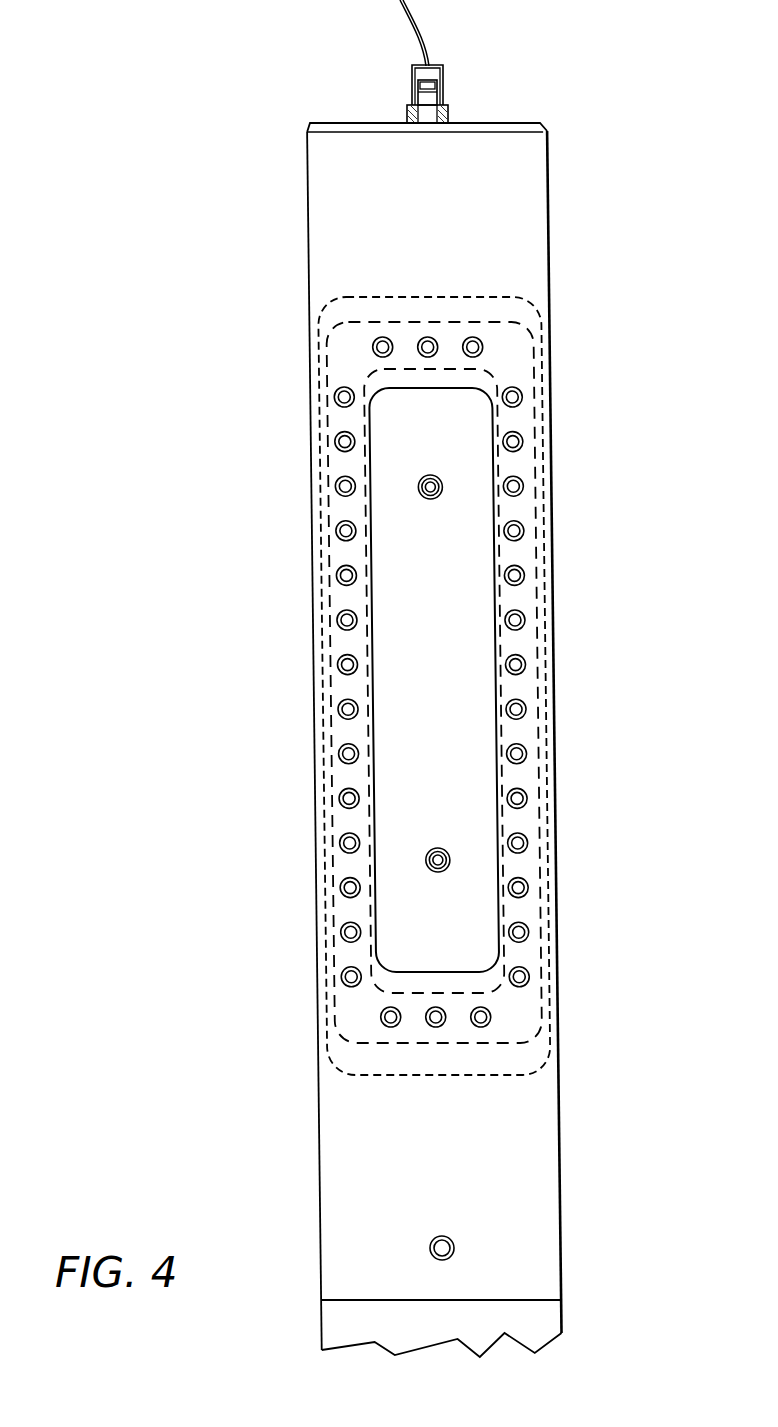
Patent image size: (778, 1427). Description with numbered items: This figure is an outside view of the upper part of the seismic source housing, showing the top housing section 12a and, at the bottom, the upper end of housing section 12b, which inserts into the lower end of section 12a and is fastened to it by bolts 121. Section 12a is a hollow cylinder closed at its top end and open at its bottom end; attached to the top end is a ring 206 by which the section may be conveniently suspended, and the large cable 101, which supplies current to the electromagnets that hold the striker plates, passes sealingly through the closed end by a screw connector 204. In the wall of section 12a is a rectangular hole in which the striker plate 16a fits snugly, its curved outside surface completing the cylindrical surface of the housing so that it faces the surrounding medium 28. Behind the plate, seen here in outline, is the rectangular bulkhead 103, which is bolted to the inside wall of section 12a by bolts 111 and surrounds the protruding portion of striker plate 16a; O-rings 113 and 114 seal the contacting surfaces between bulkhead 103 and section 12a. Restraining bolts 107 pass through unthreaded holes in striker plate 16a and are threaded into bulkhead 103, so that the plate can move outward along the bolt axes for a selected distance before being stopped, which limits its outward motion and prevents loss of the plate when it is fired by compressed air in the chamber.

The cable 101 is at (423, 33).
The ring 206 is at (433, 68).
The screw connector 204 is at (423, 97).
The housing section 12a is at (525, 183).
The housing section 12b is at (538, 1327).
The bulkhead 103 is at (347, 300).
The O-ring 113 is at (497, 322).
The O-ring 114 is at (380, 370).
The striker plate 16a is at (467, 651).
The bolts 111 is at (478, 347).
The restraining bolts 107 is at (418, 488).
The bolts 121 is at (453, 1245).
The medium 28 is at (630, 526).